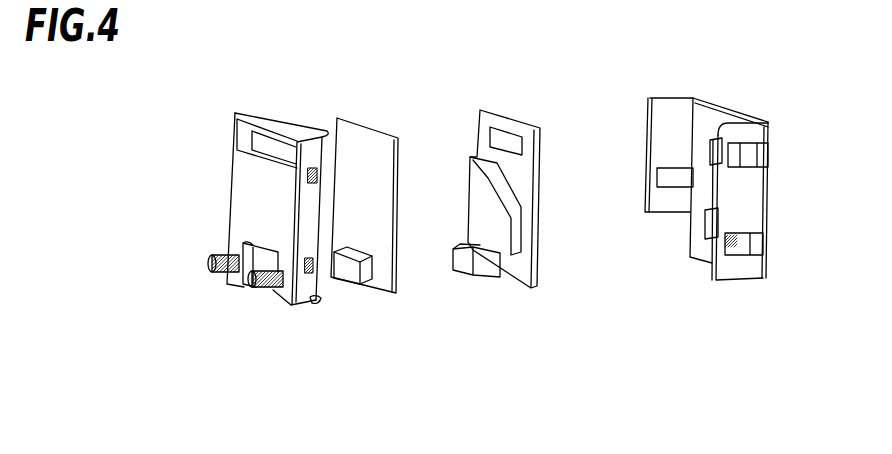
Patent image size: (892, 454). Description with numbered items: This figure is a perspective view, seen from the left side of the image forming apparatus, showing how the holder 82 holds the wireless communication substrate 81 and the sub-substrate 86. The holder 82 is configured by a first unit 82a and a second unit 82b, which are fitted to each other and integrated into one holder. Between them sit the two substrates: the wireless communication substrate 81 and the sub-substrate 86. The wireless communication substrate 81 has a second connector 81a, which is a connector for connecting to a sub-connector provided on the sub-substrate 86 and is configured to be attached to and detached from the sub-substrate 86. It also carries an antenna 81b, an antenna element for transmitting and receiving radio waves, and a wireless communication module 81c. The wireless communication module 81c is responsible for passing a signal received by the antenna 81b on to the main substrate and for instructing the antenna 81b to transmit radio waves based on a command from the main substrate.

The holder 82 is at (488, 267).
The first unit 82a is at (298, 293).
The second unit 82b is at (725, 270).
The sub-substrate 86 is at (372, 121).
The wireless communication substrate 81 is at (517, 195).
The second connector 81a is at (465, 267).
The antenna 81b is at (518, 148).
The wireless communication module 81c is at (505, 192).